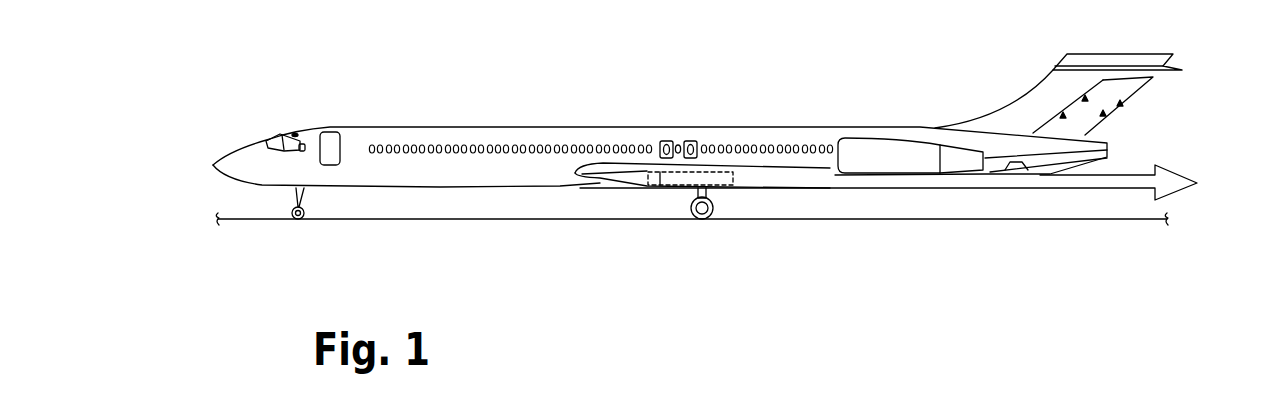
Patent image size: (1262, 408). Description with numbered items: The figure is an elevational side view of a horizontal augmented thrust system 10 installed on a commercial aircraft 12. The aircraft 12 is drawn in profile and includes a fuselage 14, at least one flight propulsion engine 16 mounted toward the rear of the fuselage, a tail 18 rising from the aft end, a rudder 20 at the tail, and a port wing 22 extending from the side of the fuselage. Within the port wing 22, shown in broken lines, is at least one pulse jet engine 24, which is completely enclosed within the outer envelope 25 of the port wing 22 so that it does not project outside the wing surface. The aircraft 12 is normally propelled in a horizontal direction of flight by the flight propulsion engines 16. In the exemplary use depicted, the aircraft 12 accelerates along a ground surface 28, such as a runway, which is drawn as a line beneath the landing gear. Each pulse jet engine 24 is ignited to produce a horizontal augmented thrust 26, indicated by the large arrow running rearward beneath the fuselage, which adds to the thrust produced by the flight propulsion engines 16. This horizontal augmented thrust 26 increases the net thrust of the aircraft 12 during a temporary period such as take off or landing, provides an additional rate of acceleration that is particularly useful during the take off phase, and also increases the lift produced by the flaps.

The augmented thrust system 10 is at (332, 86).
The aircraft 12 is at (531, 127).
The fuselage 14 is at (795, 128).
The flight propulsion engine 16 is at (886, 150).
The tail 18 is at (1045, 102).
The rudder 20 is at (1123, 110).
The port wing 22 is at (583, 182).
The pulse jet engine 24 is at (681, 183).
The outer envelope 25 is at (627, 196).
The horizontal augmented thrust 26 is at (1115, 180).
The ground surface 28 is at (340, 219).